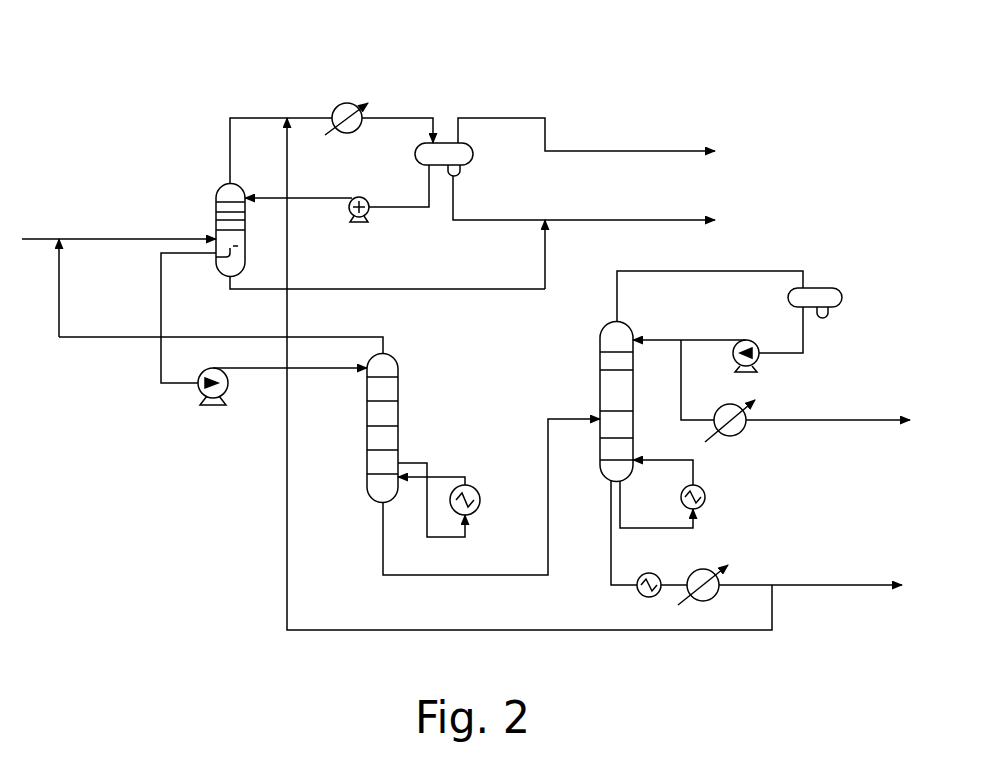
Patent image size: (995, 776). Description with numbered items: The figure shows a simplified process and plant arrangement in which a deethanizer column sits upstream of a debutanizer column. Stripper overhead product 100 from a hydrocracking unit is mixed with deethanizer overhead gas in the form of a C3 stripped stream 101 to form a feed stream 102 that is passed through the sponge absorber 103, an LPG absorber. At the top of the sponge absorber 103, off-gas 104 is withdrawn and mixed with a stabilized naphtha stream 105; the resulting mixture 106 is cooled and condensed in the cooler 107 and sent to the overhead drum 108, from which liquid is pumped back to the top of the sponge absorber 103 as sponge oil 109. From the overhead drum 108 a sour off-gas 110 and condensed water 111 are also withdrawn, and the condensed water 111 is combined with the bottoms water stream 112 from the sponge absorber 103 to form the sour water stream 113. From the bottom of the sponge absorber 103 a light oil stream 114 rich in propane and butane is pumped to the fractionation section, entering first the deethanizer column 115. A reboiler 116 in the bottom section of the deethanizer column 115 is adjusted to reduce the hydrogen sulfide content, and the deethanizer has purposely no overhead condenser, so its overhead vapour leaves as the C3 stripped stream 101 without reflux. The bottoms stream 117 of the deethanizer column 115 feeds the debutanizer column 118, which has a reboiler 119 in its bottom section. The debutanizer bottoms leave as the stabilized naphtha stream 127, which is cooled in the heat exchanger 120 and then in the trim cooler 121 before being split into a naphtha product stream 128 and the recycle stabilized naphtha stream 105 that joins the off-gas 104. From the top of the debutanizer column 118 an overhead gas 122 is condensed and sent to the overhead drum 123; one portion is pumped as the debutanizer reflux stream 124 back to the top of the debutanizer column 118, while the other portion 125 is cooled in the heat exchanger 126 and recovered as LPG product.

The stripper overhead product 100 is at (71, 227).
The C3 stripped stream 101 is at (198, 296).
The feed stream 102 is at (168, 227).
The sponge absorber 103 is at (216, 205).
The off-gas 104 is at (258, 135).
The stabilized naphtha stream 105 is at (529, 392).
The mixture 106 is at (310, 102).
The cooler 107 is at (342, 104).
The overhead drum 108 is at (444, 143).
The sponge oil 109 is at (337, 193).
The sour off-gas 110 is at (586, 135).
The condensed water 111 is at (508, 254).
The bottoms water stream 112 is at (387, 276).
The sour water stream 113 is at (584, 200).
The light oil stream 114 is at (241, 329).
The deethanizer column 115 is at (365, 462).
The reboiler 116 is at (474, 486).
The bottoms stream 117 is at (491, 497).
The debutanizer column 118 is at (600, 345).
The reboiler 119 is at (705, 503).
The heat exchanger 120 is at (650, 574).
The trim cooler 121 is at (723, 581).
The overhead gas 122 is at (710, 282).
The overhead drum 123 is at (815, 288).
The debutanizer reflux stream 124 is at (718, 339).
The other portion 125 is at (705, 380).
The heat exchanger 126 is at (748, 411).
The stabilized naphtha stream 127 is at (610, 585).
The naphtha product stream 128 is at (870, 587).